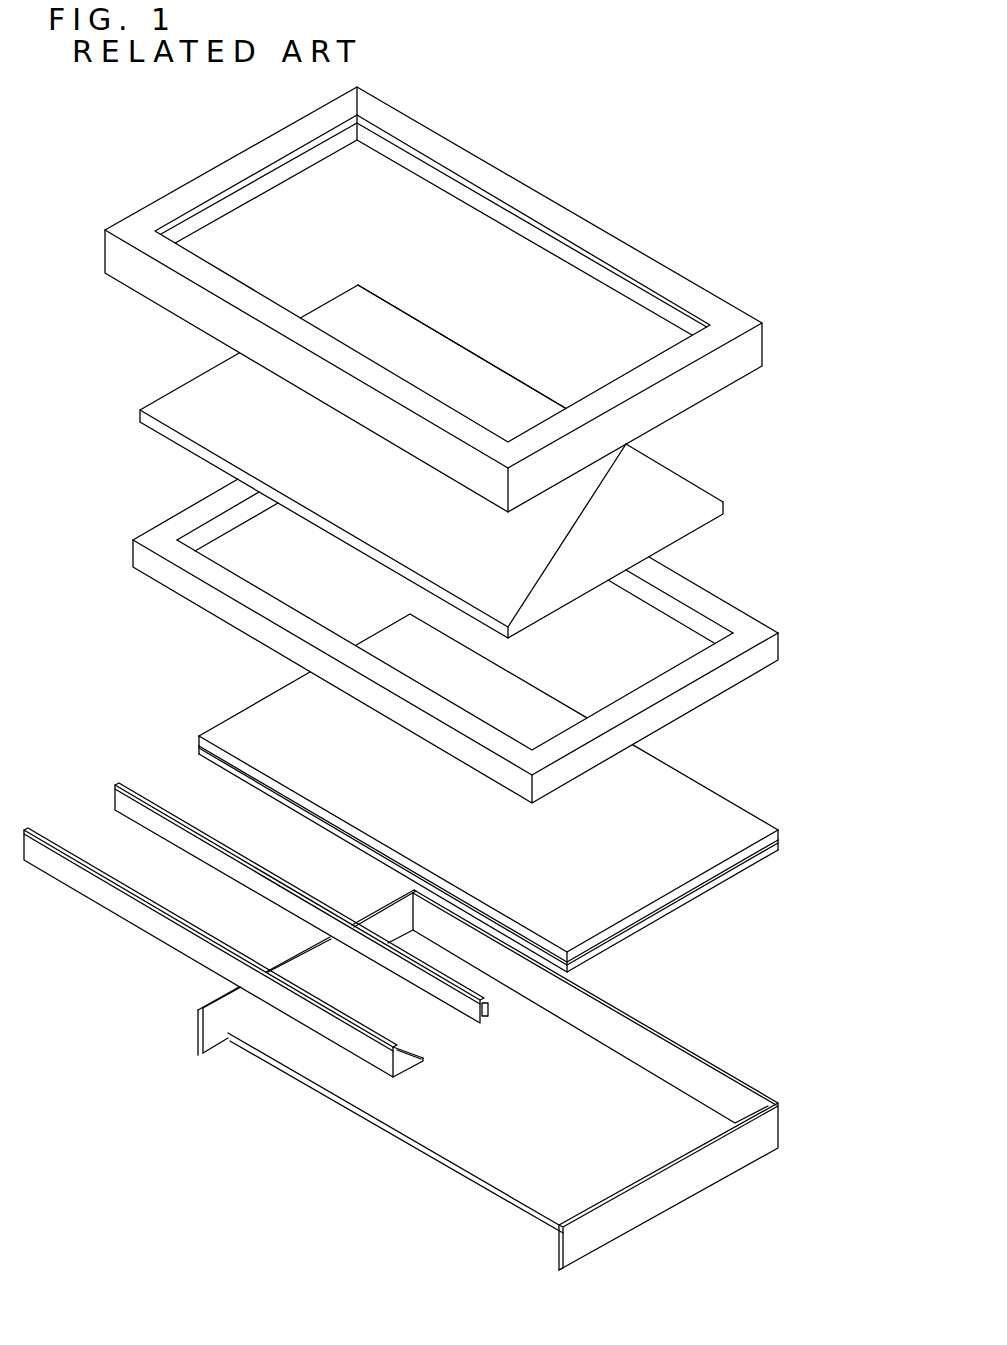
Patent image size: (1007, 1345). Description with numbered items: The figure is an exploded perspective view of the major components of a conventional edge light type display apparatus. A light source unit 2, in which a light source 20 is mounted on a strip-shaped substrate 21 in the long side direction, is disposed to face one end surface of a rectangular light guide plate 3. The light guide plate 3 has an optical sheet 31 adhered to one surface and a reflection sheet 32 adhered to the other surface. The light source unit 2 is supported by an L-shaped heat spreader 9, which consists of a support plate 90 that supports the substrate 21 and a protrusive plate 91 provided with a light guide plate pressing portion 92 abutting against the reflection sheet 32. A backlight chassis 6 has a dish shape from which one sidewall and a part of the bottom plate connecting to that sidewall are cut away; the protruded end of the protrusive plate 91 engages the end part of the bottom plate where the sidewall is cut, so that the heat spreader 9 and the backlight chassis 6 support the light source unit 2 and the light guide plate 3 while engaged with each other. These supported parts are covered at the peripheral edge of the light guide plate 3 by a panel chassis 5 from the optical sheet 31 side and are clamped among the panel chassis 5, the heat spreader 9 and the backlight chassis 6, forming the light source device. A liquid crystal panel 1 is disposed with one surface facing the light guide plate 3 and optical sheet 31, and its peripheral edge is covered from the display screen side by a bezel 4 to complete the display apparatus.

The liquid crystal panel 1 is at (688, 493).
The light source unit 2 is at (425, 865).
The light guide plate 3 is at (506, 793).
The bezel 4 is at (103, 234).
The panel chassis 5 is at (172, 515).
The backlight chassis 6 is at (728, 1202).
The heat spreader 9 is at (219, 1014).
The light source 20 is at (488, 1008).
The substrate 21 is at (467, 1010).
The optical sheet 31 is at (728, 822).
The reflection sheet 32 is at (723, 882).
The support plate 90 is at (58, 868).
The protrusive plate 91 is at (397, 1074).
The light guide plate pressing portion 92 is at (413, 1070).